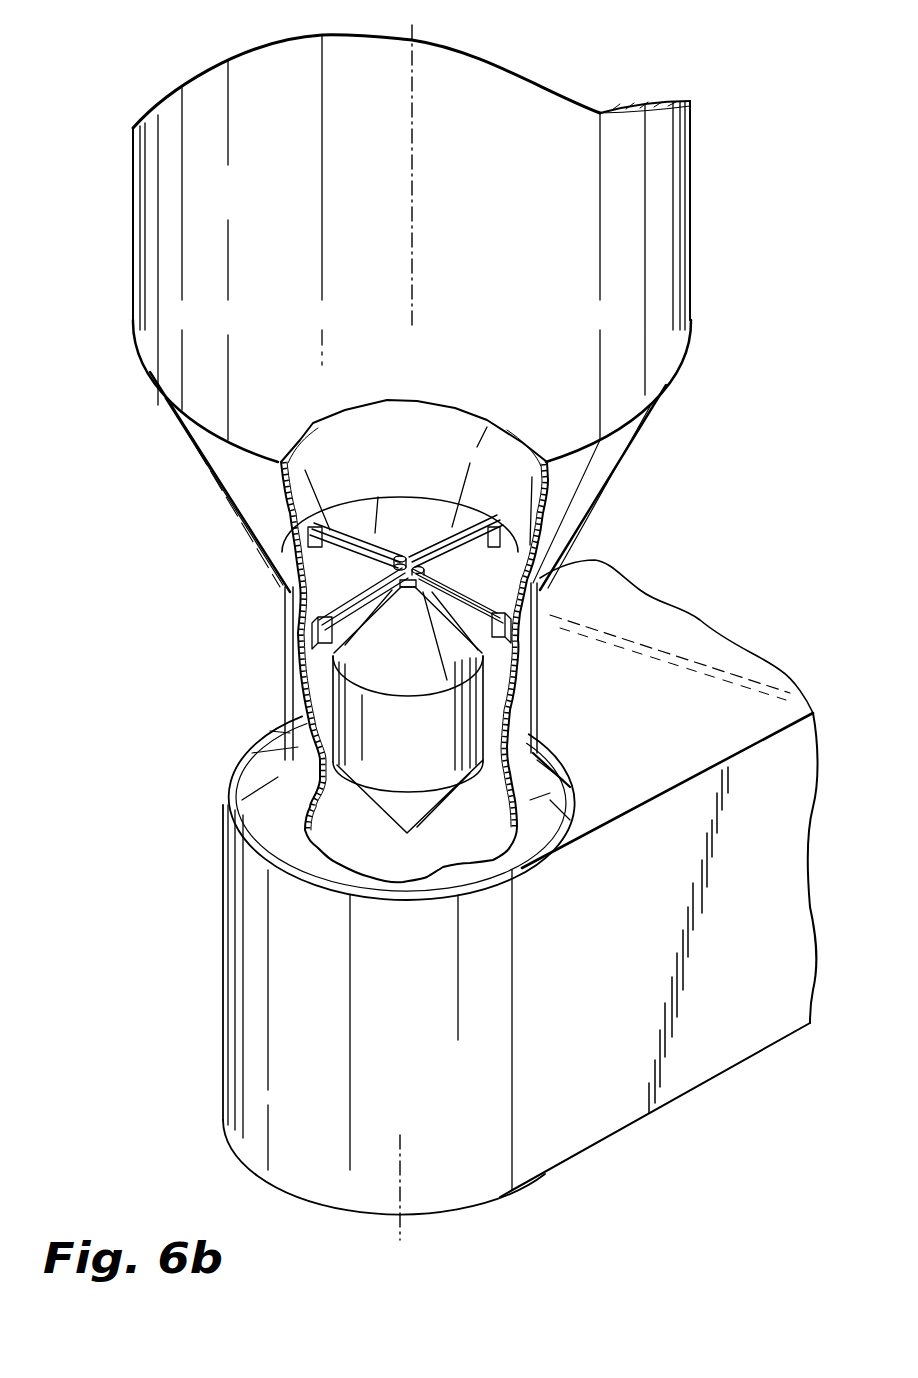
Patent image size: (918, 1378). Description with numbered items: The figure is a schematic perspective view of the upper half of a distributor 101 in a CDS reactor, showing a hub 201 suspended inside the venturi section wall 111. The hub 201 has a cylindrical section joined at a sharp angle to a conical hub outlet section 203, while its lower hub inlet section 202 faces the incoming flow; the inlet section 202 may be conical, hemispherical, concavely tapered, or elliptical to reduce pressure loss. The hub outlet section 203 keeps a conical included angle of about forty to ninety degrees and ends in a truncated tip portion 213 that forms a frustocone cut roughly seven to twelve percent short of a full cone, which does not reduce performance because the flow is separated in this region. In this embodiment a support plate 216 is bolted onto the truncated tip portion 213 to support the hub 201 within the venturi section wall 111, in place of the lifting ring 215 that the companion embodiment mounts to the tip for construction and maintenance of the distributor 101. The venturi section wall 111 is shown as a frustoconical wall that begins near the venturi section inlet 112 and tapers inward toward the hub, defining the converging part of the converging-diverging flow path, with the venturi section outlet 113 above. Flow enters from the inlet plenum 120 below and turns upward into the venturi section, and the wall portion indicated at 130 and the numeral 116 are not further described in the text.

The distributor 101 is at (250, 700).
The venturi section wall 111 is at (539, 577).
The venturi section inlet 112 is at (327, 887).
The venturi section outlet 113 is at (280, 590).
The hopper 116 is at (413, 40).
The inlet plenum 120 is at (731, 1030).
The hopper wall 130 is at (693, 247).
The hub 201 is at (437, 768).
The hub inlet section 202 is at (330, 710).
The hub outlet section 203 is at (440, 622).
The tip portion 213 is at (416, 558).
The lifting ring 215 is at (347, 545).
The support plate 216 is at (484, 520).